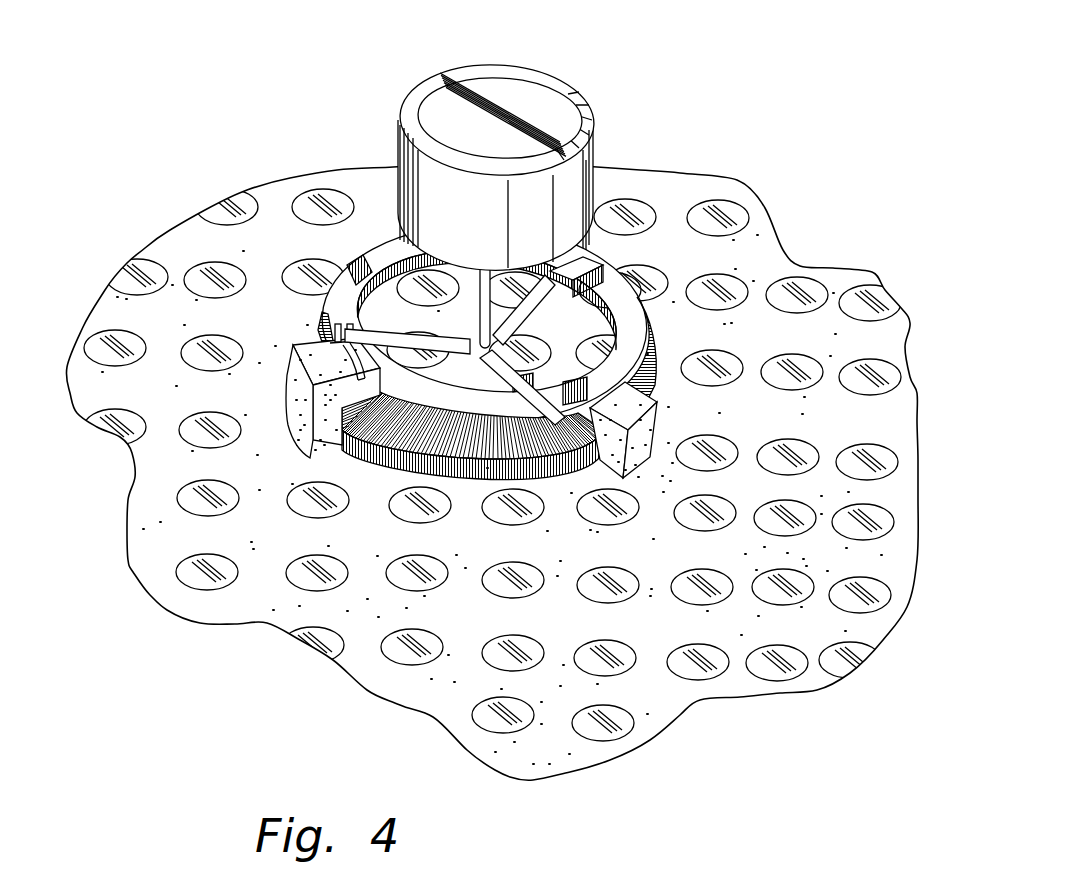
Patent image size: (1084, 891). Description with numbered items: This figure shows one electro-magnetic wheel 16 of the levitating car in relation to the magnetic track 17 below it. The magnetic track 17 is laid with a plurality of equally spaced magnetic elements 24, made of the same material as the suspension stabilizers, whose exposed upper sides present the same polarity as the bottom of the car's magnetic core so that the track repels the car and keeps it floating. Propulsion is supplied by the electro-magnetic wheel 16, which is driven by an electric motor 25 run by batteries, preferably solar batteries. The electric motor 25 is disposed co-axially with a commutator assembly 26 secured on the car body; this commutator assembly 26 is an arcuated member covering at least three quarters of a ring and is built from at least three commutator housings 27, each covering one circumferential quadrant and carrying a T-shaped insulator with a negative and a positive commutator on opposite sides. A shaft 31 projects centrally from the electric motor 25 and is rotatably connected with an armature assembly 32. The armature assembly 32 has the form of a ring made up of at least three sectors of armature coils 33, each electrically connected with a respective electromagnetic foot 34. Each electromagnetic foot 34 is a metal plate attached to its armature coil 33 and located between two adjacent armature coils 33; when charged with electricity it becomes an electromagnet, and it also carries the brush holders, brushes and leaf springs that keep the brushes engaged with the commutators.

The electro-magnetic wheel 16 is at (607, 130).
The electric motor 25 is at (543, 97).
The commutator assembly 26 is at (638, 317).
The commutator housing 27 is at (367, 262).
The electromagnetic foot 34 is at (647, 443).
The shaft 31 is at (480, 288).
The armature coil 33 is at (477, 473).
The armature assembly 32 is at (562, 470).
The magnetic element 24 is at (307, 585).
The magnetic track 17 is at (380, 607).